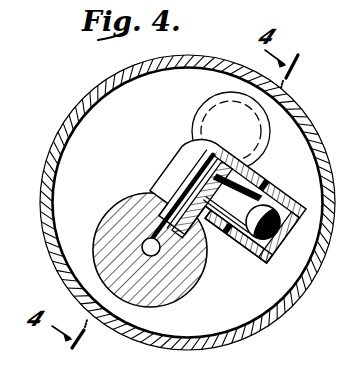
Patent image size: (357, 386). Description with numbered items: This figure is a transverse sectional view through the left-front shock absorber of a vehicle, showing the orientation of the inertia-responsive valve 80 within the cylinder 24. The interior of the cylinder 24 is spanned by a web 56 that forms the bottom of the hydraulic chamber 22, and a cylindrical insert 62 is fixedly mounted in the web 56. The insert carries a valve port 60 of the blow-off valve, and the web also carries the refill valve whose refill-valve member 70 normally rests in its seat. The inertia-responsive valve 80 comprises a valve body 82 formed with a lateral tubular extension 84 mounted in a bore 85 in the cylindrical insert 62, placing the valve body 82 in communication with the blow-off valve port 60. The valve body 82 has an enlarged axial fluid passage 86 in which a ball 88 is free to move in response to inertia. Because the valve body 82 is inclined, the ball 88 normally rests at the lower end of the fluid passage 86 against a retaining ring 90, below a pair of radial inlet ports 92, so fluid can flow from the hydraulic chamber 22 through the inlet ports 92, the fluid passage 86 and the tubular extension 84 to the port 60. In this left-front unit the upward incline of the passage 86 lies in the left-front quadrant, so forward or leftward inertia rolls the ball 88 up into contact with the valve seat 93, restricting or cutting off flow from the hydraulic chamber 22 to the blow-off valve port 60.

The hydraulic chamber 22 is at (70, 268).
The cylinder 24 is at (43, 197).
The web 56 is at (108, 138).
The valve port 60 is at (142, 247).
The cylindrical insert 62 is at (104, 213).
The refill-valve member 70 is at (196, 106).
The inertia-responsive valve 80 is at (279, 237).
The valve body 82 is at (223, 205).
The lateral tubular extension 84 is at (176, 199).
The bore 85 is at (199, 198).
The axial fluid passage 86 is at (238, 187).
The ball 88 is at (238, 236).
The retaining ring 90 is at (262, 221).
The radial inlet ports 92 is at (245, 207).
The valve seat 93 is at (227, 215).